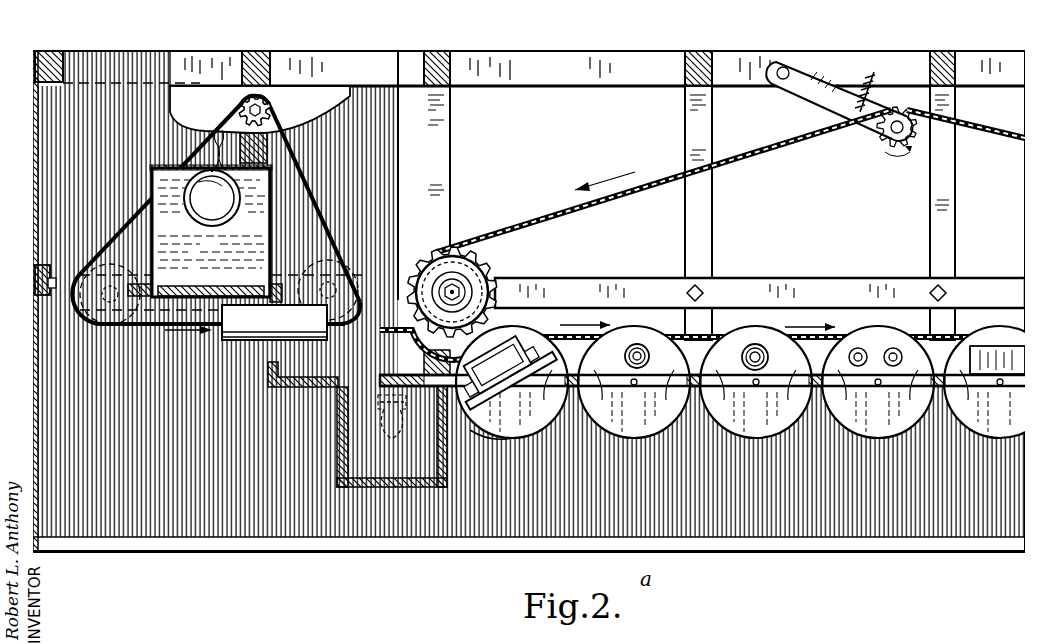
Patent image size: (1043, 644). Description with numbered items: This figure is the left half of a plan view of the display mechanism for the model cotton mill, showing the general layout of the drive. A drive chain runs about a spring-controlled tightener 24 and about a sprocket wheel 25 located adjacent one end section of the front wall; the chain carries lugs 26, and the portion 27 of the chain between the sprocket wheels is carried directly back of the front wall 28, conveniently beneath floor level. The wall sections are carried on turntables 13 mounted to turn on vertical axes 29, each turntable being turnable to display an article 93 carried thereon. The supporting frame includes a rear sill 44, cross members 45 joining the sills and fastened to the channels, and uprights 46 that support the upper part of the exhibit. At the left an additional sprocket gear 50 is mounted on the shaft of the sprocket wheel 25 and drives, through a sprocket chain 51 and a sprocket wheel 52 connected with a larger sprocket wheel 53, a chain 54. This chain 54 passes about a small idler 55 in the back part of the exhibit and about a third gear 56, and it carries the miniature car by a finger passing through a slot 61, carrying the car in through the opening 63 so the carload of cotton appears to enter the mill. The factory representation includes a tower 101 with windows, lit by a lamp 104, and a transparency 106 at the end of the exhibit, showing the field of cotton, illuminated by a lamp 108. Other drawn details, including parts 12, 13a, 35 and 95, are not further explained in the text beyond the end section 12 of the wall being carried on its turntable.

The section 12 is at (568, 352).
The turntable 13 is at (711, 382).
The drum cover 13a is at (520, 342).
The spring-controlled tightener 24 is at (818, 98).
The sprocket wheel 25 is at (466, 290).
The lug 26 is at (428, 332).
The portion of the chain 27 is at (752, 278).
The front wall 28 is at (652, 182).
The vertical axis 29 is at (506, 388).
The drum rim 35 is at (486, 430).
The rear sill 44 is at (590, 62).
The cross member 45 is at (452, 168).
The upright 46 is at (49, 58).
The sprocket gear 50 is at (478, 262).
The sprocket chain 51 is at (410, 248).
The sprocket wheel 52 is at (268, 246).
The larger sprocket wheel 53 is at (270, 262).
The chain 54 is at (273, 116).
The small idler 55 is at (242, 108).
The third gear 56 is at (36, 272).
The slot 61 is at (150, 328).
The opening 63 is at (268, 366).
The article 93 is at (549, 367).
The container cap 95 is at (768, 357).
The tower 101 is at (370, 490).
The lamp 104 is at (392, 425).
The transparency 106 is at (182, 286).
The lamp 108 is at (212, 197).